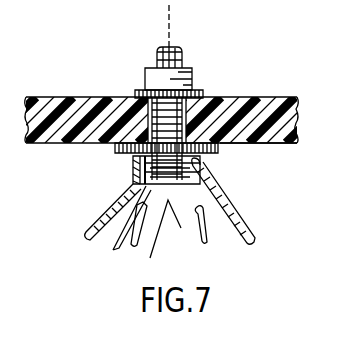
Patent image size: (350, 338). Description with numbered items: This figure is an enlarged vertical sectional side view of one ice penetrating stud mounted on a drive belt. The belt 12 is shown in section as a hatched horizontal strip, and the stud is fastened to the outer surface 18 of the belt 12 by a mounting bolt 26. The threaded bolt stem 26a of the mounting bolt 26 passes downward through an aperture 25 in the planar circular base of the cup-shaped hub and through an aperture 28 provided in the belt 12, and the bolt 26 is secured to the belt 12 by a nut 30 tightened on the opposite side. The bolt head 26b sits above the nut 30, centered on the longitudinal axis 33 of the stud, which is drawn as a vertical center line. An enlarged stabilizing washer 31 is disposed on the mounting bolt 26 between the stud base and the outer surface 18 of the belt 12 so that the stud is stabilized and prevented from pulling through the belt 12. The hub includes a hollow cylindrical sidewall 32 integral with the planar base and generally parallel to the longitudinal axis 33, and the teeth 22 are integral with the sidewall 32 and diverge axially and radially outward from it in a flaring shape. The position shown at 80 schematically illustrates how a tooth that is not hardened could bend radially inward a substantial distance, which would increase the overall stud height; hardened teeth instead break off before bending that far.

The belt 12 is at (288, 115).
The outer surface of the belt 18 is at (289, 143).
The teeth 22 is at (226, 236).
The aperture 25 is at (134, 163).
The mounting bolt 26 is at (124, 182).
The bolt stem 26a is at (132, 110).
The bolt head 26b is at (182, 56).
The aperture 28 is at (128, 108).
The nut 30 is at (183, 80).
The stabilizing washer 31 is at (226, 150).
The sidewall 32 is at (208, 174).
The longitudinal axis 33 is at (168, 27).
The bent tooth position 80 is at (112, 238).